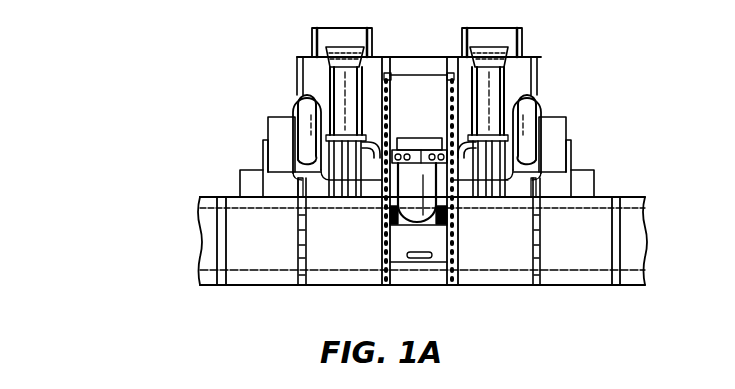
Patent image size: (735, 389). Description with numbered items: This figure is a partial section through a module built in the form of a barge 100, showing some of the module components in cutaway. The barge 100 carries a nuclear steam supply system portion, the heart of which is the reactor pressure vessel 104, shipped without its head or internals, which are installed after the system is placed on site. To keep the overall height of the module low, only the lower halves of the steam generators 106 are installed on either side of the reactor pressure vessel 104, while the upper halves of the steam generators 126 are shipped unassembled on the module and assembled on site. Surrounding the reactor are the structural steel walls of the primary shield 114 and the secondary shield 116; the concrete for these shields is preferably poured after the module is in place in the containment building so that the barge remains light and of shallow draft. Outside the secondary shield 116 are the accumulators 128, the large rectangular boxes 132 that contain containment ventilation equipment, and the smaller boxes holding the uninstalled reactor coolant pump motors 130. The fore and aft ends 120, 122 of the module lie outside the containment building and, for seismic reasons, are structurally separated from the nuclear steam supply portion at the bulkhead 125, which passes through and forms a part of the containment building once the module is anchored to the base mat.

The barge 100 is at (212, 298).
The reactor pressure vessel 104 is at (420, 138).
The lower halves of the steam generators 106 is at (507, 77).
The primary shield 114 is at (388, 73).
The secondary shield 116 is at (305, 57).
The fore end 120 is at (633, 195).
The aft end 122 is at (205, 196).
The bulkhead 125 is at (200, 243).
The upper halves of the steam generators 126 is at (572, 134).
The accumulators 128 is at (296, 107).
The reactor coolant pump motors 130 is at (594, 167).
The large rectangular boxes 132 is at (268, 118).